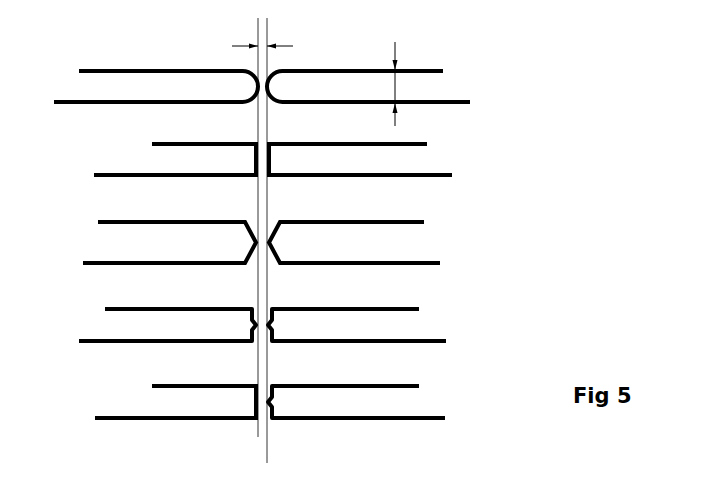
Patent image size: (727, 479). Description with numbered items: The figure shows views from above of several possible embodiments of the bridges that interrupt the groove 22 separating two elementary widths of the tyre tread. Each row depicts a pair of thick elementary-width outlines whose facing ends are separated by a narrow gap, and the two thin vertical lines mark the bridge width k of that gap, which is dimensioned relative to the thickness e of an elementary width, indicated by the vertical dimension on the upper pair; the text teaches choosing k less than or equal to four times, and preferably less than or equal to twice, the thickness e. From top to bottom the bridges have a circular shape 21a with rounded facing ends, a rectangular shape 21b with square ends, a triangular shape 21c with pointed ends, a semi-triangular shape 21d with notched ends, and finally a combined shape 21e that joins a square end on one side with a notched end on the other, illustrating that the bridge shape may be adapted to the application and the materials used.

The groove 22 is at (262, 79).
The circular shape bridge 21a is at (260, 88).
The rectangular shape bridge 21b is at (262, 163).
The triangular shape bridge 21c is at (262, 252).
The semi-triangular shape bridge 21d is at (260, 327).
The combined shape bridge 21e is at (260, 410).
The bridge width k is at (262, 34).
The thickness of an elementary width e is at (387, 84).